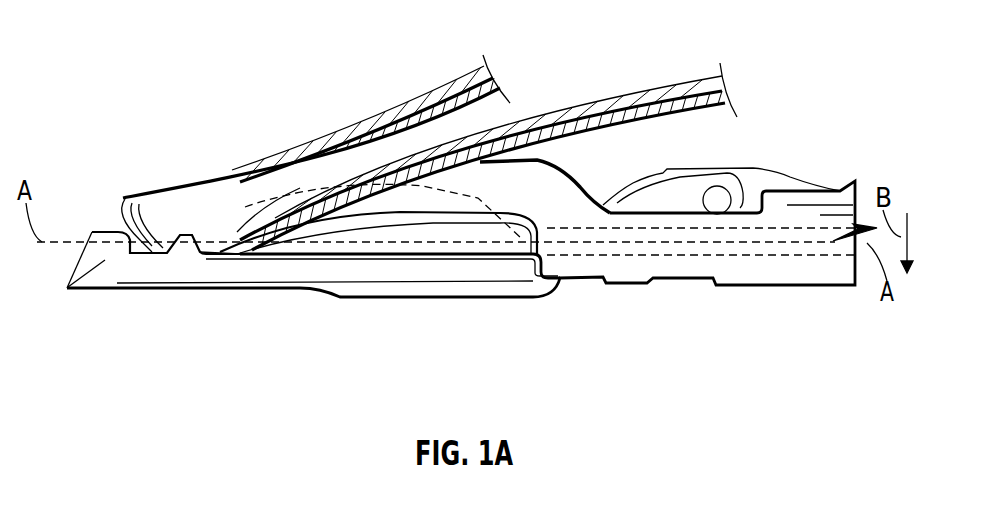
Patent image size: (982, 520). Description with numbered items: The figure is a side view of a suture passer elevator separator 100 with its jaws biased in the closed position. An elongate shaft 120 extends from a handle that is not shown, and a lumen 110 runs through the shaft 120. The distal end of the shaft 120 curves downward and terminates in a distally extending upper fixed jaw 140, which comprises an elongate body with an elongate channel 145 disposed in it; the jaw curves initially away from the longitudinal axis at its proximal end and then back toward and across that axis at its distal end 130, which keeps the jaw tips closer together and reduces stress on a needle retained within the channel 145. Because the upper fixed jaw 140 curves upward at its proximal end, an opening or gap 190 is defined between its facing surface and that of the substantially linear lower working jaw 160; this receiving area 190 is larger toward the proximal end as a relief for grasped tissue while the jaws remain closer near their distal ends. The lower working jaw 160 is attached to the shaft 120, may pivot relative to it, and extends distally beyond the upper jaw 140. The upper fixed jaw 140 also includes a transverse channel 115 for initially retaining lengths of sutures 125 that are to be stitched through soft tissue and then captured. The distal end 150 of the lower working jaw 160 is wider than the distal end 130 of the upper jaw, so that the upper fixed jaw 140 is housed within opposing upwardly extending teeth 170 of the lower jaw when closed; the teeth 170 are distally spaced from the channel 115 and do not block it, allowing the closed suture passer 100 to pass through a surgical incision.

The suture passer elevator separator 100 is at (115, 54).
The lumen 110 is at (640, 247).
The transverse channel 115 is at (230, 243).
The elongate shaft 120 is at (733, 285).
The suture 125 is at (357, 117).
The distal end of upper fixed jaw 130 is at (163, 210).
The upper fixed jaw 140 is at (210, 183).
The elongate channel 145 is at (480, 203).
The distal end of lower working jaw 150 is at (68, 287).
The lower working jaw 160 is at (317, 283).
The teeth 170 is at (122, 217).
The gap 190 is at (430, 242).